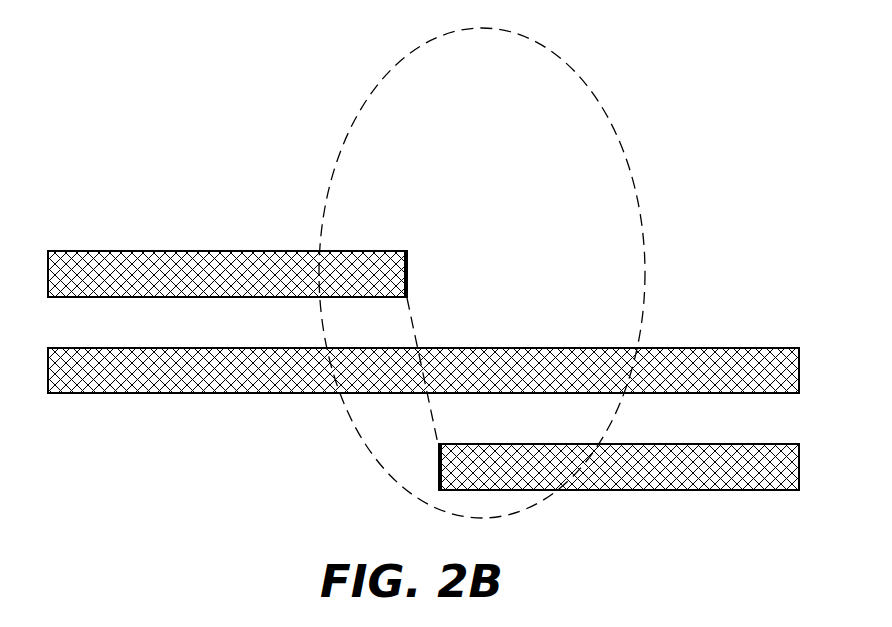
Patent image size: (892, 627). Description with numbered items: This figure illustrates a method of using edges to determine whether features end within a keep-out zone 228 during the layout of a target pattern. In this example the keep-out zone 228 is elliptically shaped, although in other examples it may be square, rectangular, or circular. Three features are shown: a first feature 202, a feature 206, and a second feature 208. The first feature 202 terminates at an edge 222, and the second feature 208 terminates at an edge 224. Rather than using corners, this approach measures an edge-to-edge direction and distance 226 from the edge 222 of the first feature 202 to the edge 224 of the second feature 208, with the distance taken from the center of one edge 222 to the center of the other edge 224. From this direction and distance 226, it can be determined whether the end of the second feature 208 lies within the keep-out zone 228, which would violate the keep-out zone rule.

The first feature 202 is at (196, 251).
The feature 206 is at (771, 348).
The second feature 208 is at (717, 491).
The edge of the first feature 222 is at (408, 255).
The edge of the second feature 224 is at (438, 462).
The direction and distance 226 is at (416, 325).
The keep-out zone 228 is at (640, 210).